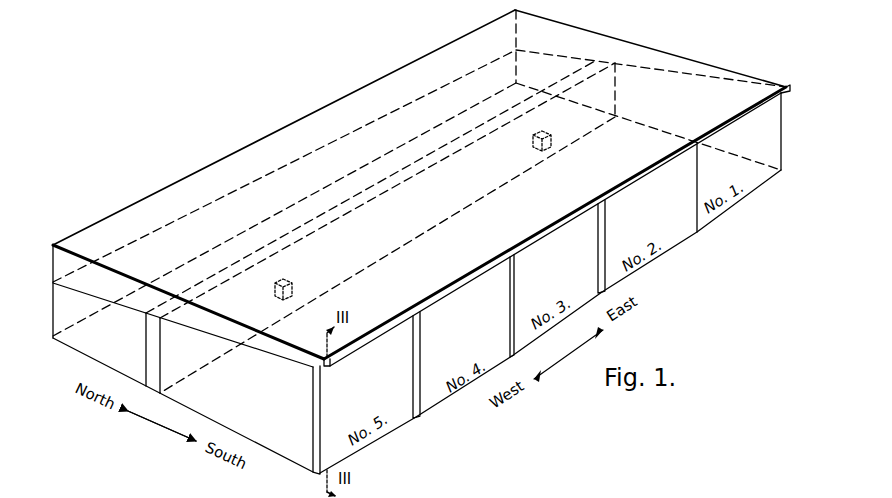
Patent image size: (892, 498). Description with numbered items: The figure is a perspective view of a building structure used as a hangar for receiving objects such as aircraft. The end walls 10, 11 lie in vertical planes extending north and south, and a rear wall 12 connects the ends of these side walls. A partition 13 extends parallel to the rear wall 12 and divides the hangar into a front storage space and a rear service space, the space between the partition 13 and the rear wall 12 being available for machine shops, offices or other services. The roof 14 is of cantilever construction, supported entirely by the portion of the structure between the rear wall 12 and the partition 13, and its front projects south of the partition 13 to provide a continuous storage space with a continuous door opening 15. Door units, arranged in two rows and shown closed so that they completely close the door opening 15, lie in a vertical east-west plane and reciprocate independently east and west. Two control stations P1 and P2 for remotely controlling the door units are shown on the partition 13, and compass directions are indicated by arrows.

The end wall 10 is at (287, 440).
The end wall 11 is at (722, 88).
The rear wall 12 is at (67, 318).
The partition 13 is at (171, 364).
The roof 14 is at (188, 181).
The door opening 15 is at (757, 130).
The control station P1 is at (552, 134).
The control station P2 is at (295, 284).